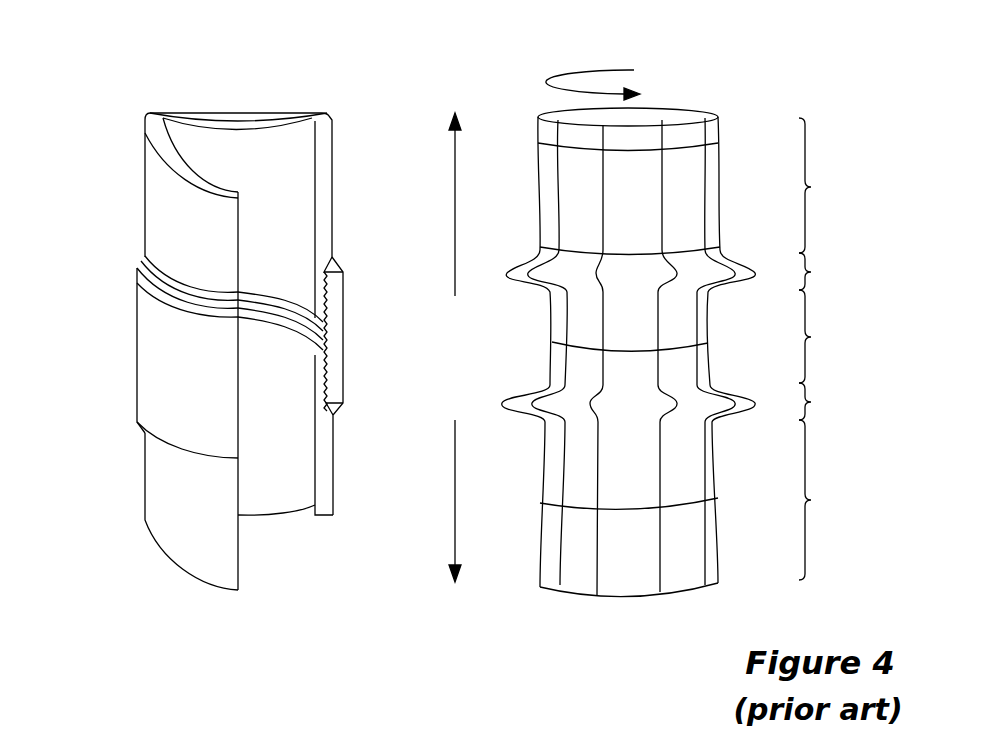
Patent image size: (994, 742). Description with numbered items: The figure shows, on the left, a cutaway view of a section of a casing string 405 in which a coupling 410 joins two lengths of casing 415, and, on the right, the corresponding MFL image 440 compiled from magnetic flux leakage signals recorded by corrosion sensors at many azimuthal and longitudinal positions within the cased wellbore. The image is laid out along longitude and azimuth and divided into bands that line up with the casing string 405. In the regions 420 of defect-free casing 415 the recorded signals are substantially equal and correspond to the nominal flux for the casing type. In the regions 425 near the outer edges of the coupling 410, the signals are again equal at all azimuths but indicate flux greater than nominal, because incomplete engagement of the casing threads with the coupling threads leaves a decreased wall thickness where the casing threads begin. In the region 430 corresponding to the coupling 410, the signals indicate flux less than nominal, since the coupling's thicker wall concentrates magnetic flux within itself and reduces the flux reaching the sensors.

The casing string 405 is at (157, 63).
The coupling 410 is at (157, 375).
The casing 415 is at (157, 215).
The regions of defect-free casing 420 is at (835, 349).
The regions near the outer edges of the coupling 425 is at (835, 336).
The region corresponding to the coupling 430 is at (835, 336).
The MFL image 440 is at (737, 84).